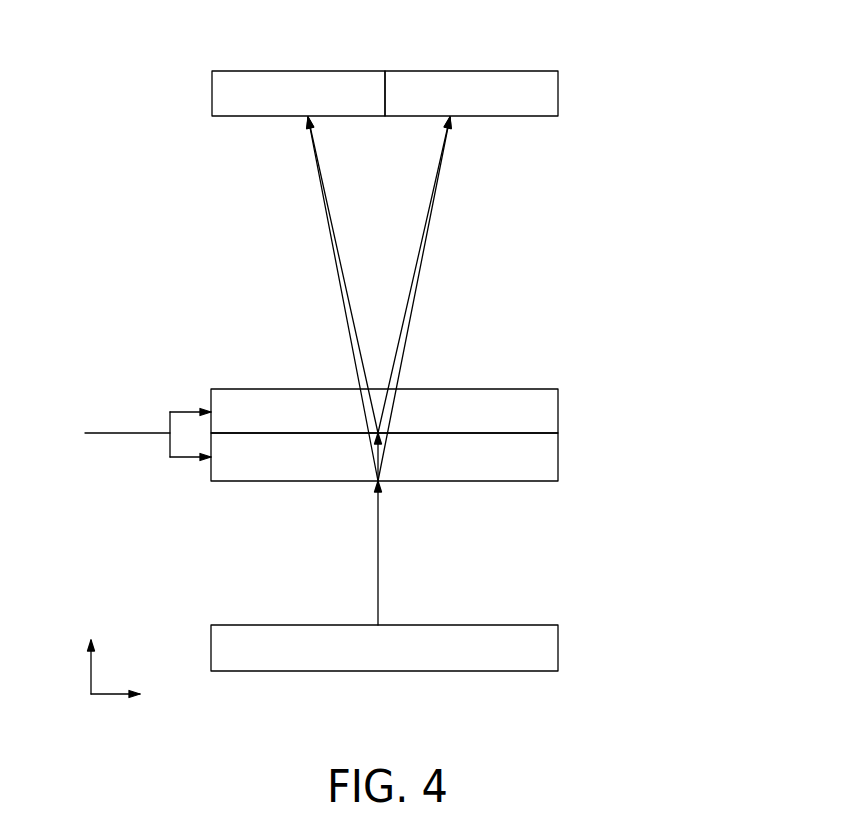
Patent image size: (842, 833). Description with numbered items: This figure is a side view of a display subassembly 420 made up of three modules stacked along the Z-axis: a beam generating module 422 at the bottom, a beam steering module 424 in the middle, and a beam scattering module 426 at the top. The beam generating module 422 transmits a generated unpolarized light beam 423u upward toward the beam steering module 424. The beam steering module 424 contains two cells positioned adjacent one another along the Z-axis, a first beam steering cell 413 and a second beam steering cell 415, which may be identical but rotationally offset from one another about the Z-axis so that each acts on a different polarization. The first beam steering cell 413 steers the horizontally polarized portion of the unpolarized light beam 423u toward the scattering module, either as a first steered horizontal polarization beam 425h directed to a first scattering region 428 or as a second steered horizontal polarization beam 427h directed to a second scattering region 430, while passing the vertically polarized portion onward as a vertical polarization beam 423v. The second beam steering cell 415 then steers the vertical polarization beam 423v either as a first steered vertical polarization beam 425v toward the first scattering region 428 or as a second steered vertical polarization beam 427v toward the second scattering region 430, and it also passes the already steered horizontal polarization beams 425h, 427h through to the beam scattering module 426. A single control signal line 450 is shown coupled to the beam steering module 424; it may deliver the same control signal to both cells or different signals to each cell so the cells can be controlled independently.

The display subassembly 420 is at (393, 376).
The beam generating module 422 is at (566, 650).
The unpolarized light beam 423u is at (380, 553).
The vertical polarization beam 423v is at (381, 458).
The beam steering module 424 is at (465, 426).
The first beam steering cell 413 is at (560, 455).
The second beam steering cell 415 is at (560, 416).
The first steered horizontal polarization beam 425h is at (352, 364).
The first steered vertical polarization beam 425v is at (344, 245).
The second steered horizontal polarization beam 427h is at (404, 366).
The second steered vertical polarization beam 427v is at (432, 196).
The beam scattering module 426 is at (425, 65).
The first scattering region 428 is at (236, 70).
The second scattering region 430 is at (527, 70).
The control signal line 450 is at (123, 433).